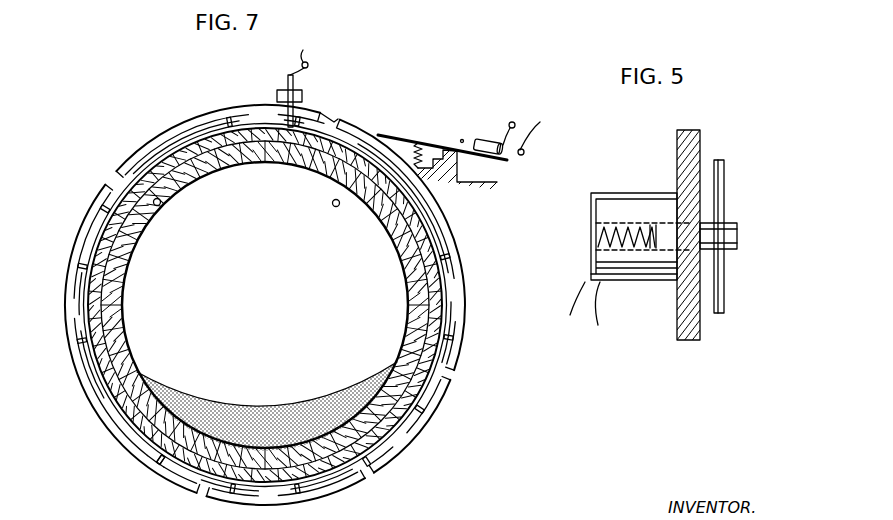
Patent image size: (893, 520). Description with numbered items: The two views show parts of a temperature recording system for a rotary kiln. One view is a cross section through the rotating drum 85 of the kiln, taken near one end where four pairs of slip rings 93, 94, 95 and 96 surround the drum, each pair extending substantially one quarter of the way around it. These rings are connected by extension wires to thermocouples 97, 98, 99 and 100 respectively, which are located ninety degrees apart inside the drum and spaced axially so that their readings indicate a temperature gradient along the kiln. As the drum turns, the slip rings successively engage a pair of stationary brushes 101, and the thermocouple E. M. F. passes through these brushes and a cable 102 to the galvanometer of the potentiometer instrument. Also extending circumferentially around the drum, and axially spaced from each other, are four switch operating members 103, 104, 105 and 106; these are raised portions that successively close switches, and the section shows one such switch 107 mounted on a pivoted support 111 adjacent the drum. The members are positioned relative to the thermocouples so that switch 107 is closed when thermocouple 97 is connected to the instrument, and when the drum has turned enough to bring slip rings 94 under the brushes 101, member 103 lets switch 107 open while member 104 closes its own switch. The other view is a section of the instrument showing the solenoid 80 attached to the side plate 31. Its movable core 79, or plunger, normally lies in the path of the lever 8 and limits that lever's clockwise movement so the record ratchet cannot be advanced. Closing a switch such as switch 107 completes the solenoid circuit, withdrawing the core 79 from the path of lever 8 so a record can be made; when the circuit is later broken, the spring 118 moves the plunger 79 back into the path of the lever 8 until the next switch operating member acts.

In FIG. 7, the rotating drum 85 is at (438, 299).
In FIG. 7, the slip rings 93 is at (436, 231).
In FIG. 7, the slip rings 94 is at (420, 422).
In FIG. 7, the slip rings 95 is at (126, 440).
In FIG. 7, the slip rings 96 is at (150, 143).
In FIG. 7, the thermocouple 97 is at (332, 203).
In FIG. 7, the thermocouple 98 is at (350, 385).
In FIG. 7, the thermocouple 99 is at (170, 395).
In FIG. 7, the thermocouple 100 is at (161, 202).
In FIG. 7, the stationary brushes 101 is at (295, 84).
In FIG. 7, the cable 102 is at (305, 51).
In FIG. 7, the switch operating member 103 is at (452, 241).
In FIG. 7, the switch operating member 104 is at (370, 472).
In FIG. 7, the switch operating member 105 is at (86, 398).
In FIG. 7, the switch operating member 106 is at (200, 116).
In FIG. 7, the switch 107 is at (490, 140).
In FIG. 7, the pivoted support 111 is at (392, 133).
In FIG. 5, the side plate 31 is at (677, 147).
In FIG. 5, the lever 8 is at (722, 176).
In FIG. 5, the solenoid 80 is at (644, 193).
In FIG. 5, the spring 118 is at (642, 217).
In FIG. 5, the core 79 is at (738, 233).